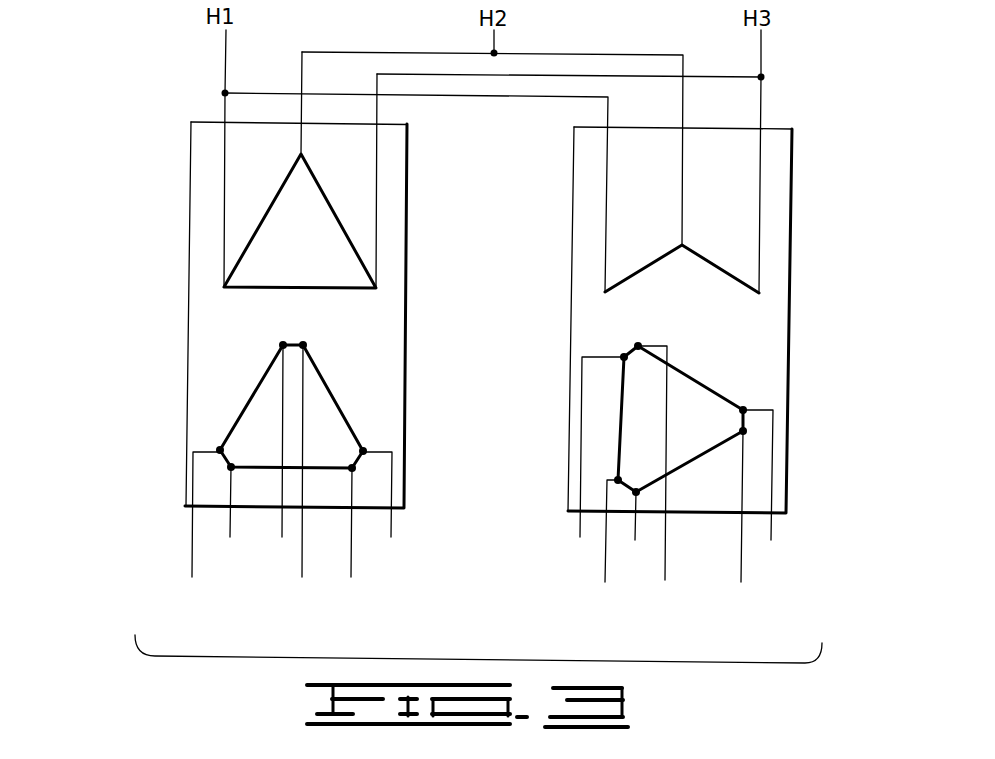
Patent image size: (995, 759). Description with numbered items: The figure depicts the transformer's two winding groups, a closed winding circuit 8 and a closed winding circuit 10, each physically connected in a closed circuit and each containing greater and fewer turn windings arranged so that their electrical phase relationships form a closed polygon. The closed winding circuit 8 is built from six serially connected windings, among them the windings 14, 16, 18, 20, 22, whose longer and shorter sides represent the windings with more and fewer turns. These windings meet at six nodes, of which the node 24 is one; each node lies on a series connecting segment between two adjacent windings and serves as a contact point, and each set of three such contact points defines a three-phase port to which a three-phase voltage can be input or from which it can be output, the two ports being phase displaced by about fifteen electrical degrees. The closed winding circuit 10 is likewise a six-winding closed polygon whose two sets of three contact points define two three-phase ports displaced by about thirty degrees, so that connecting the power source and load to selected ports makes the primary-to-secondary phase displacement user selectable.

The closed winding circuit 8 is at (190, 170).
The closed winding circuit 10 is at (791, 175).
The winding 14 is at (225, 248).
The winding 16 is at (261, 473).
The winding 18 is at (290, 248).
The winding 20 is at (710, 268).
The winding 22 is at (347, 385).
The node 24 is at (730, 382).